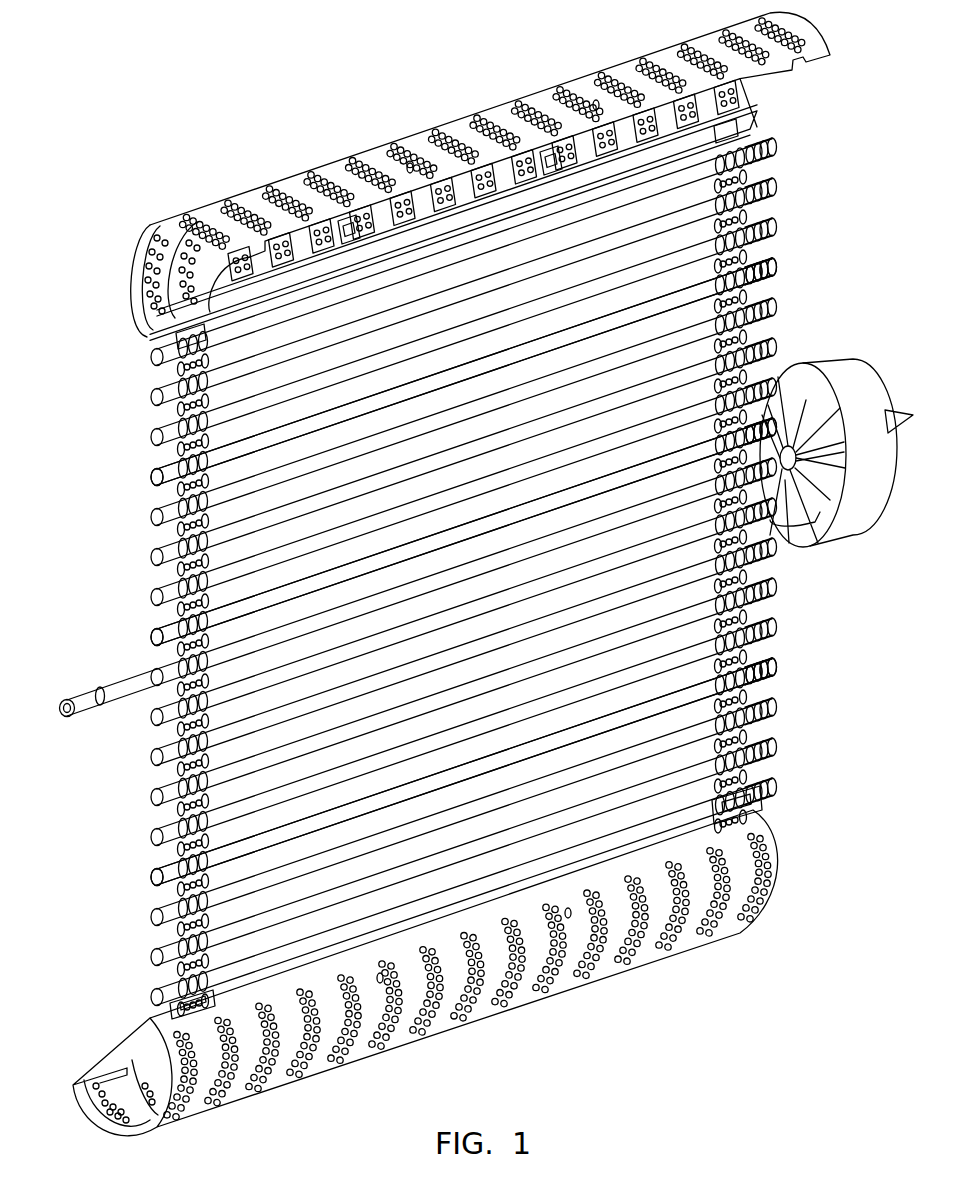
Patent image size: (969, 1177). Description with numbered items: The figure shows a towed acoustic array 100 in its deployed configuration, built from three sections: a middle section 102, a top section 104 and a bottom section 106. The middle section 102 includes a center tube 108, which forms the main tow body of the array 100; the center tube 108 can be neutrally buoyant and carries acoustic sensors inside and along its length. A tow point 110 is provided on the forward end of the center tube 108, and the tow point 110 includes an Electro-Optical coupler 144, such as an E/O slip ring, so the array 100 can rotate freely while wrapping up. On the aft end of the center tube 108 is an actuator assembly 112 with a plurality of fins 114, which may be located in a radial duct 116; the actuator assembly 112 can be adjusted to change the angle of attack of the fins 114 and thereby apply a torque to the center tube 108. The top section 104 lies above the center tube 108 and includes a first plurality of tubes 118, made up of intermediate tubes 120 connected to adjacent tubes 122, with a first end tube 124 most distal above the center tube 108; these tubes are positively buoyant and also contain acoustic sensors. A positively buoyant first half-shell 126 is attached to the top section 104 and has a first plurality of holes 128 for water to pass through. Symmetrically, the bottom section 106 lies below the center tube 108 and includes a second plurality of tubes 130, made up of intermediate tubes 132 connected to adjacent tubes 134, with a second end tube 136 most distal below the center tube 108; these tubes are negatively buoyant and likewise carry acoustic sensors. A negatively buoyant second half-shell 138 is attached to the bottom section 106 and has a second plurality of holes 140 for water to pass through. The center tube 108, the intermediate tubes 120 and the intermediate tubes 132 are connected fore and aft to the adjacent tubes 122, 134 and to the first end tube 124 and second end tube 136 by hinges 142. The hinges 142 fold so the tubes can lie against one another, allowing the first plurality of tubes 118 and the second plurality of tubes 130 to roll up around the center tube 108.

The array 100 is at (182, 155).
The middle section 102 is at (119, 648).
The top section 104 is at (114, 495).
The bottom section 106 is at (113, 876).
The center tube 108 is at (399, 615).
The tow point 110 is at (63, 720).
The actuator assembly 112 is at (843, 446).
The fins 114 is at (820, 515).
The radial duct 116 is at (878, 495).
The first plurality of tubes 118 is at (137, 402).
The intermediate tubes 120 is at (777, 308).
The adjacent tubes 122 is at (781, 265).
The first end tube 124 is at (777, 148).
The first half-shell 126 is at (480, 173).
The first plurality of holes 128 is at (482, 122).
The second plurality of tubes 130 is at (136, 933).
The intermediate tubes 132 is at (775, 670).
The adjacent tubes 134 is at (778, 713).
The second end tube 136 is at (771, 794).
The second half-shell 138 is at (434, 973).
The second plurality of holes 140 is at (521, 982).
The hinges 142 is at (190, 827).
The Electro-Optical (E/O) coupler 144 is at (97, 708).